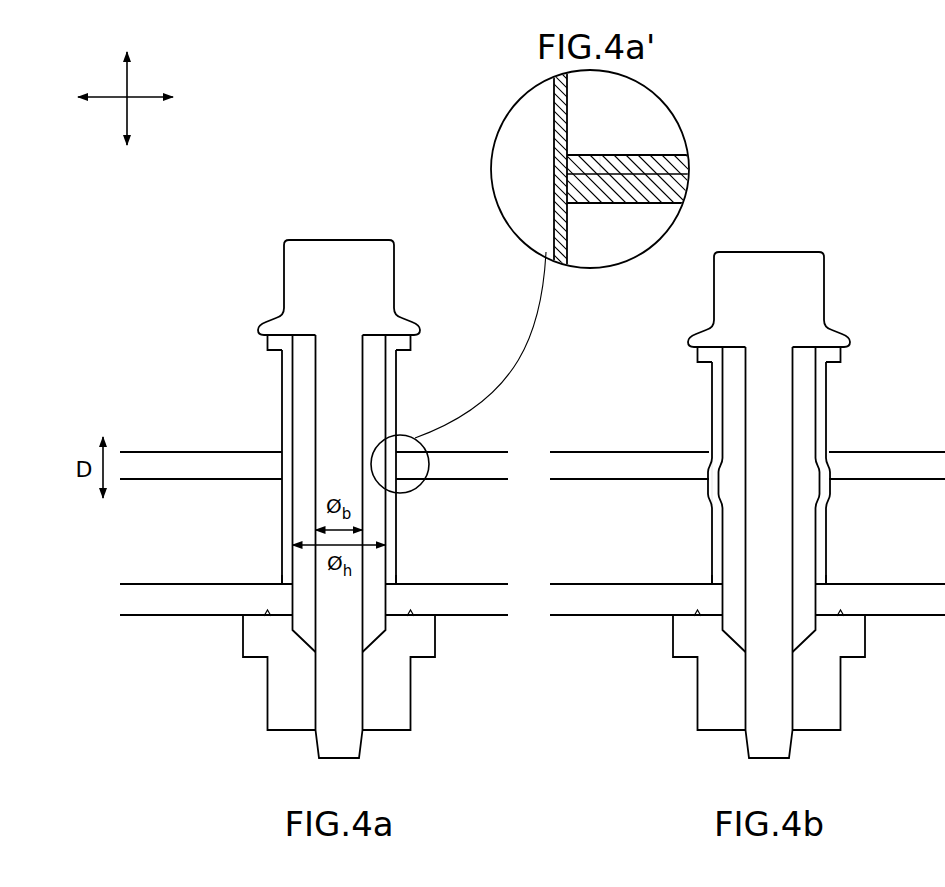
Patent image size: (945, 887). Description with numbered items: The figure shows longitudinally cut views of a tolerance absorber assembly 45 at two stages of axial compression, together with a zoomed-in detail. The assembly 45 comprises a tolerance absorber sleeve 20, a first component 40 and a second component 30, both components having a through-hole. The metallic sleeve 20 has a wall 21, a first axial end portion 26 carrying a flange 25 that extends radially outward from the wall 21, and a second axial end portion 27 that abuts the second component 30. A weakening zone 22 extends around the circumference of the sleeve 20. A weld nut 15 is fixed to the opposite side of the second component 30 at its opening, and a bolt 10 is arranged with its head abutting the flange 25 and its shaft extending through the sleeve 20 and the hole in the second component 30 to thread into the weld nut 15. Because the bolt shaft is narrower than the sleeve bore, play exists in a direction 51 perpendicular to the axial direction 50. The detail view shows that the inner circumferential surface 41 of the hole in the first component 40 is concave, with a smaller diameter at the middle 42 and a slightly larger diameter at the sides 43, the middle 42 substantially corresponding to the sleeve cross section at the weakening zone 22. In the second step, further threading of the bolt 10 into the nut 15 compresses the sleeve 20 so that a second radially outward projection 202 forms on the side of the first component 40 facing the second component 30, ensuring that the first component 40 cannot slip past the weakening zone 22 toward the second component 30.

In FIG. 4a, the bolt 10 is at (318, 240).
In FIG. 4b, the bolt 10 is at (750, 251).
In FIG. 4a, the weld nut 15 is at (268, 686).
In FIG. 4b, the weld nut 15 is at (698, 699).
In FIG. 4a, the tolerance absorber sleeve 20 is at (339, 467).
In FIG. 4a', the tolerance absorber sleeve 20 is at (542, 118).
In FIG. 4b, the tolerance absorber sleeve 20 is at (709, 380).
In FIG. 4a', the wall 21 is at (553, 133).
In FIG. 4b, the wall 21 is at (712, 394).
In FIG. 4a, the weakening zone 22 is at (280, 510).
In FIG. 4b, the weakening zone 22 is at (712, 507).
In FIG. 4a, the flange 25 is at (268, 338).
In FIG. 4b, the flange 25 is at (698, 350).
In FIG. 4a, the first axial end portion 26 is at (417, 333).
In FIG. 4b, the first axial end portion 26 is at (847, 347).
In FIG. 4a, the second axial end portion 27 is at (397, 583).
In FIG. 4b, the second axial end portion 27 is at (827, 565).
In FIG. 4a, the second component 30 is at (163, 615).
In FIG. 4b, the second component 30 is at (607, 615).
In FIG. 4a, the first component 40 is at (187, 480).
In FIG. 4a', the first component 40 is at (687, 155).
In FIG. 4b, the first component 40 is at (617, 480).
In FIG. 4a', the inner circumferential surface 41 is at (573, 153).
In FIG. 4a', the middle of the inner circumferential surface 42 is at (688, 167).
In FIG. 4a', the sides of the inner circumferential surface 43 is at (688, 193).
In FIG. 4a, the tolerance absorber assembly 45 is at (385, 224).
In FIG. 4b, the tolerance absorber assembly 45 is at (815, 242).
In FIG. 4a, the axial direction 50 is at (97, 110).
In FIG. 4a, the direction perpendicular to the axial direction 51 is at (142, 82).
In FIG. 4b, the second radially outward projection 202 is at (831, 490).